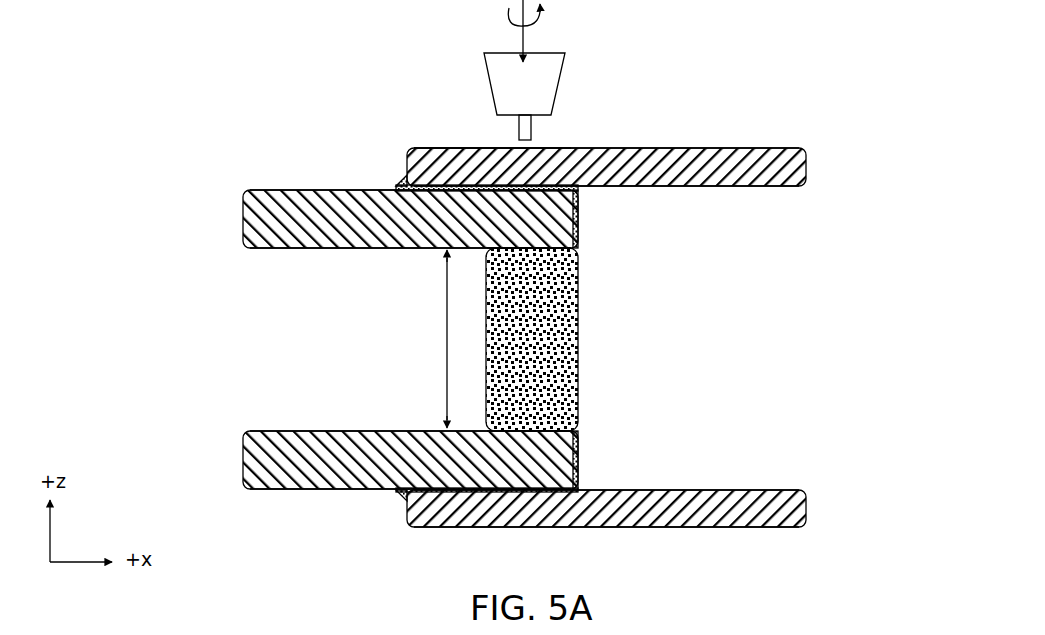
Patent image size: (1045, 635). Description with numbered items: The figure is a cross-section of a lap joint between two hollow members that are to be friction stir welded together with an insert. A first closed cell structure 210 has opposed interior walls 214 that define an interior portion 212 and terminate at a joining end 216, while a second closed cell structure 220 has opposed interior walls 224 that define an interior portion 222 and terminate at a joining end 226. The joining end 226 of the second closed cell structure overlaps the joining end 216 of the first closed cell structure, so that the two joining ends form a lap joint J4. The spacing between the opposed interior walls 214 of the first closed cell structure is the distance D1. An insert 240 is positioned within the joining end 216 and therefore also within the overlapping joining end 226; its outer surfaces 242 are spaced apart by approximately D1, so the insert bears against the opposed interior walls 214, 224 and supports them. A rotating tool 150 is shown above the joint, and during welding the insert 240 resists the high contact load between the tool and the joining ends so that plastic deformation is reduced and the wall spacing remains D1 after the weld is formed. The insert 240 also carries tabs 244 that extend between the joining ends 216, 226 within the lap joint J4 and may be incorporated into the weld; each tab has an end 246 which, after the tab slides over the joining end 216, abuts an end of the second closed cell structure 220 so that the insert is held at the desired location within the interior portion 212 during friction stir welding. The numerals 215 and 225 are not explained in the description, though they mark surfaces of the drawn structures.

The rotating tool 150 is at (594, 58).
The first closed cell structure 210 is at (337, 188).
The interior portion 212 is at (280, 340).
The opposed interior walls 214 is at (300, 190).
The first workpiece inner surface 215 is at (356, 248).
The joining end 216 is at (582, 218).
The second closed cell structure 220 is at (755, 146).
The interior portion 222 is at (785, 342).
The opposed interior walls 224 is at (642, 148).
The second workpiece inner surface 225 is at (737, 186).
The joining end 226 is at (452, 146).
The insert 240 is at (584, 350).
The outer surfaces 242 is at (515, 246).
The tabs 244 is at (448, 187).
The end 246 is at (403, 181).
The distance D1 is at (427, 339).
The lap joint J4 is at (365, 512).